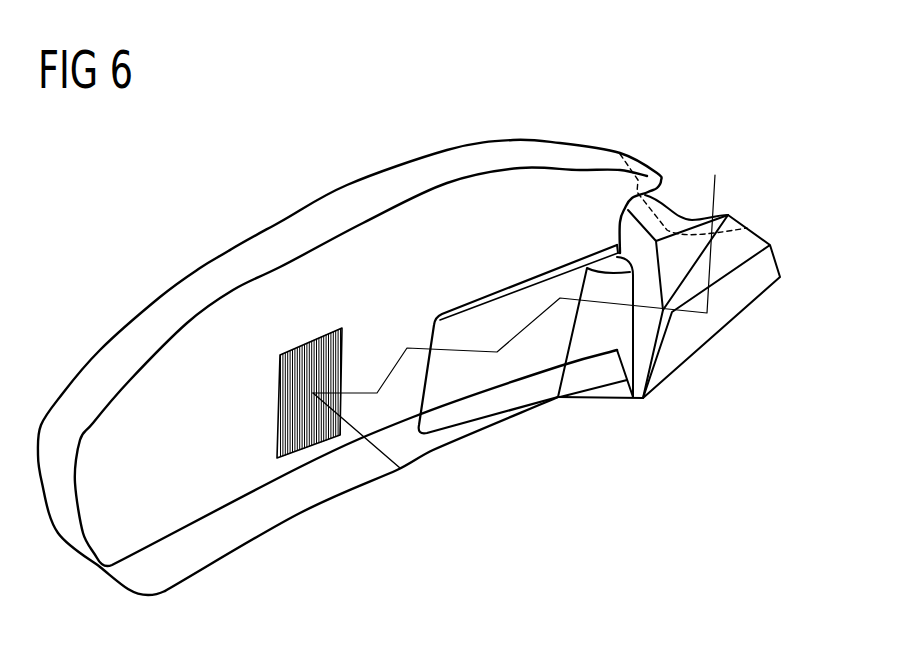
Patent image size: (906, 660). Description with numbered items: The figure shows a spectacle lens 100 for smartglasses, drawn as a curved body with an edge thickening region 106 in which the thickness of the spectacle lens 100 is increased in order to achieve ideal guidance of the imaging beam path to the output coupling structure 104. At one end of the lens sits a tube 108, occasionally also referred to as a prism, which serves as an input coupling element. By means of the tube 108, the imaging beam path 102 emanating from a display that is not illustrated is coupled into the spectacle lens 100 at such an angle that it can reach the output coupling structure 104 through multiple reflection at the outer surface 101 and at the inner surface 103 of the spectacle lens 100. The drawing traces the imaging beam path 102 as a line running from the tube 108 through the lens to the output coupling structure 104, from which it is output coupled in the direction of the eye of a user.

The spectacle lens 100 is at (362, 240).
The outer surface 101 is at (442, 140).
The imaging beam path 102 is at (397, 360).
The inner surface 103 is at (162, 423).
The output coupling structure 104 is at (313, 338).
The edge thickening region 106 is at (498, 402).
The tube 108 is at (742, 297).